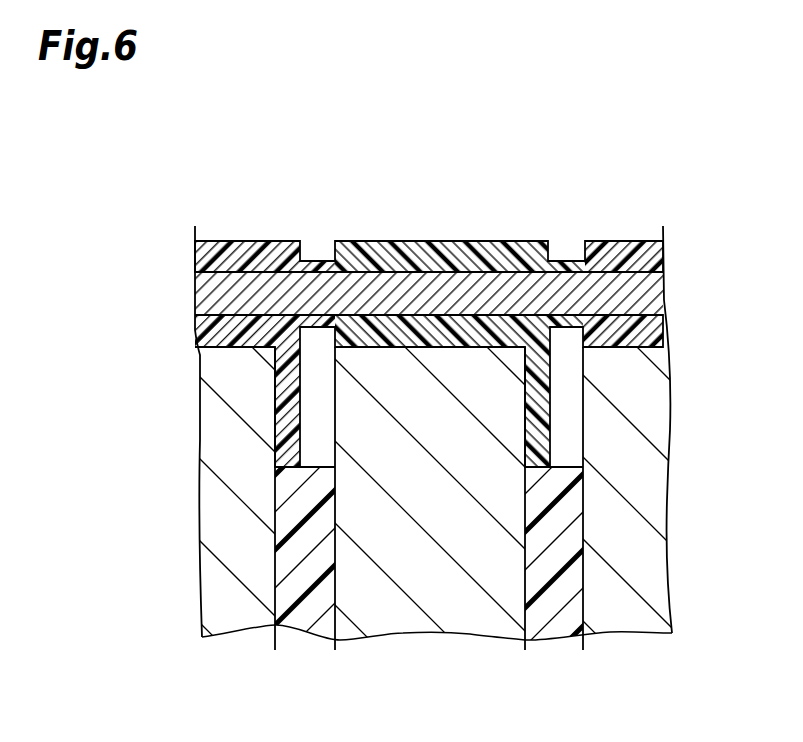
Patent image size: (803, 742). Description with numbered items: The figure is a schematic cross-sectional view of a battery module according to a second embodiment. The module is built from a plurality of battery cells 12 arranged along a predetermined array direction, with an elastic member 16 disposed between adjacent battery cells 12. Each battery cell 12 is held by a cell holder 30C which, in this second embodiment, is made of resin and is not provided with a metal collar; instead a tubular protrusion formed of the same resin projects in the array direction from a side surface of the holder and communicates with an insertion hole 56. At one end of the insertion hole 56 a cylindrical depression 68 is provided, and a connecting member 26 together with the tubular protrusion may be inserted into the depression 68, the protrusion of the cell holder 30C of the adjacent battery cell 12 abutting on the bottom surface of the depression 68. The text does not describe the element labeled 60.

The battery cell 12 is at (240, 613).
The elastic member 16 is at (307, 613).
The connecting member 26 is at (633, 300).
The cell holder 30C is at (223, 241).
The insertion hole 56 is at (250, 264).
The recess / thin portion 60 is at (322, 261).
The depression 68 is at (349, 263).